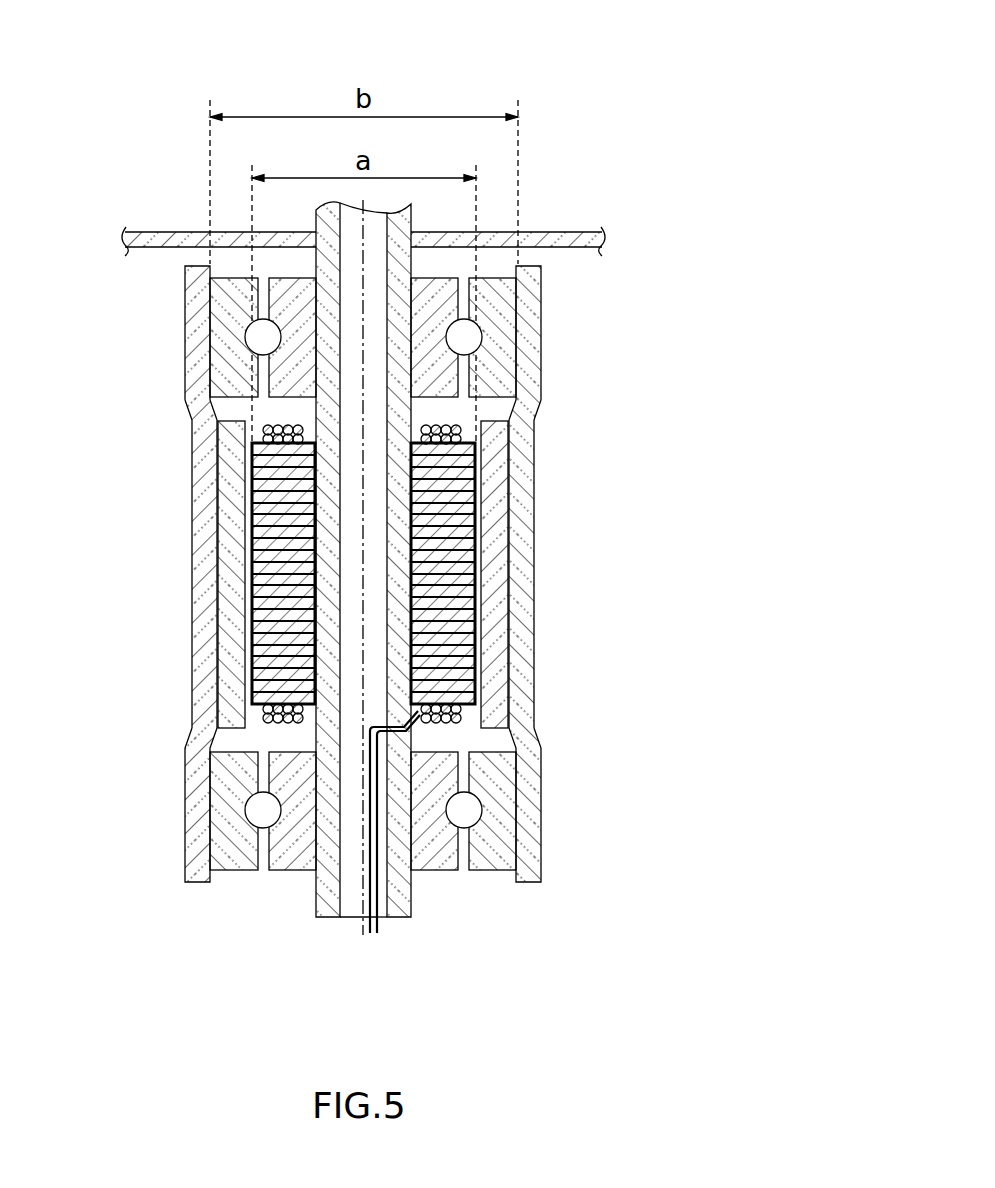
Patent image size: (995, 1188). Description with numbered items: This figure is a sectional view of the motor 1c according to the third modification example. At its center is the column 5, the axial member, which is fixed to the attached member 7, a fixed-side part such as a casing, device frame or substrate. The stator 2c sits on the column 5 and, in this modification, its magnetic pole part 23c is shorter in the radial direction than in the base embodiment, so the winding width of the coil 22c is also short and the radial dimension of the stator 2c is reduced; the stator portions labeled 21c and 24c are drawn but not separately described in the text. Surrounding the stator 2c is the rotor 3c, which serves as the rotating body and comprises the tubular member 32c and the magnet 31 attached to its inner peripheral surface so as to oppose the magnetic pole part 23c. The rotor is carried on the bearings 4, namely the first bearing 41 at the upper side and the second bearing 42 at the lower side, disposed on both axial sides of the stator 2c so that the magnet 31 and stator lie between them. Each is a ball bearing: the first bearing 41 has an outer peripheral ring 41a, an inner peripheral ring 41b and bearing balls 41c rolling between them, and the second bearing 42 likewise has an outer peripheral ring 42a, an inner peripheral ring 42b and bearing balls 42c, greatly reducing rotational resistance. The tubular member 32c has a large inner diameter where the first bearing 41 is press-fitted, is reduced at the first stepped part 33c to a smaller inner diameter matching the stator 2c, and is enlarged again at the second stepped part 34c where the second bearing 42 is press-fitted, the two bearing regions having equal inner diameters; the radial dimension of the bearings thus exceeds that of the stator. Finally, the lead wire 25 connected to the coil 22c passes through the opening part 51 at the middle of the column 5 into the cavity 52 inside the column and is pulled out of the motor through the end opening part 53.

The motor 1c is at (634, 133).
The attached member 7 is at (568, 231).
The column 5 is at (368, 593).
The cavity 52 is at (352, 899).
The end opening part 53 is at (375, 930).
The lead wire 25 is at (379, 902).
The opening part 51 is at (413, 740).
The first stepped part 33c is at (188, 408).
The second stepped part 34c is at (188, 738).
The rotor 3c is at (443, 574).
The tubular member 32c is at (528, 453).
The magnet 31 is at (497, 500).
The bearings 4 is at (481, 580).
The first bearing 41 is at (481, 323).
The outer peripheral ring 41a is at (502, 303).
The inner peripheral ring 41b is at (447, 285).
The bearing balls 41c is at (465, 337).
The second bearing 42 is at (479, 831).
The outer peripheral ring 42a is at (500, 835).
The inner peripheral ring 42b is at (450, 870).
The bearing balls 42c is at (465, 808).
The stator 2c is at (490, 575).
The rotor core 21c is at (469, 573).
The magnetic pole part 23c is at (470, 578).
The insulating layers 24c is at (410, 622).
The coil 22c is at (458, 725).